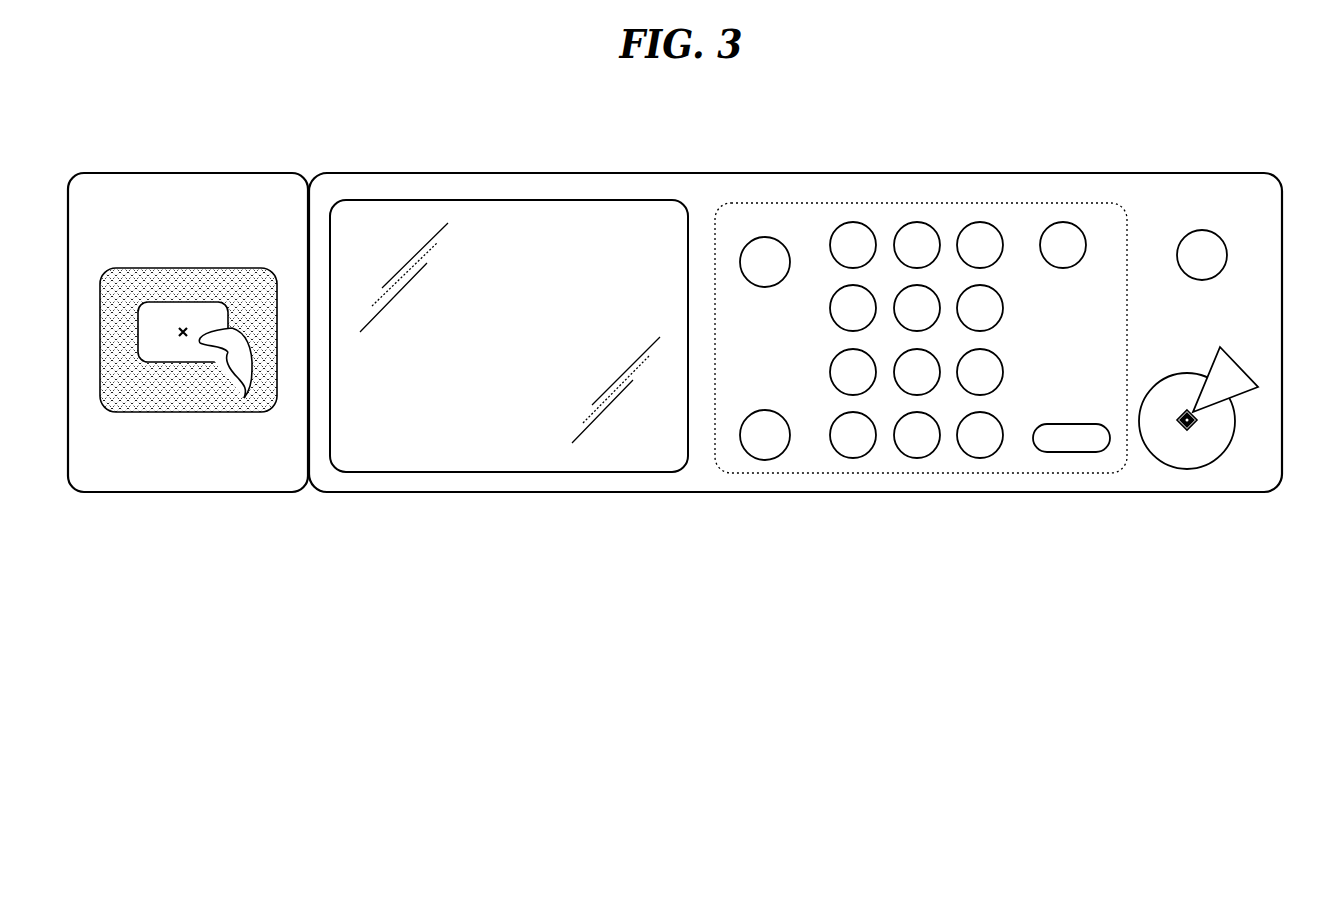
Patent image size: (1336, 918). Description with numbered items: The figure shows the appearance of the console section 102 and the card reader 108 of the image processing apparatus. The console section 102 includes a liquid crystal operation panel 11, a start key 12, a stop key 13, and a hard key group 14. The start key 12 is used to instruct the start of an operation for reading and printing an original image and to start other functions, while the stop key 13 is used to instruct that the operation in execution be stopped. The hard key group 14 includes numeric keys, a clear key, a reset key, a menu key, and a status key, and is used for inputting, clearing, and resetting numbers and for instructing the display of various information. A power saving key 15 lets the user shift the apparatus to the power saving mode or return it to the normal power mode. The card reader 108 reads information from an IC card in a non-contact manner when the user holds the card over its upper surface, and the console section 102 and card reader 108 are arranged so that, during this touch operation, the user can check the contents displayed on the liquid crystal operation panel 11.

The card reader 108 is at (190, 173).
The console section 102 is at (1088, 173).
The liquid crystal operation panel 11 is at (487, 200).
The hard key group 14 is at (813, 203).
The power saving key 15 is at (1227, 253).
The start key 12 is at (1190, 469).
The stop key 13 is at (1258, 368).